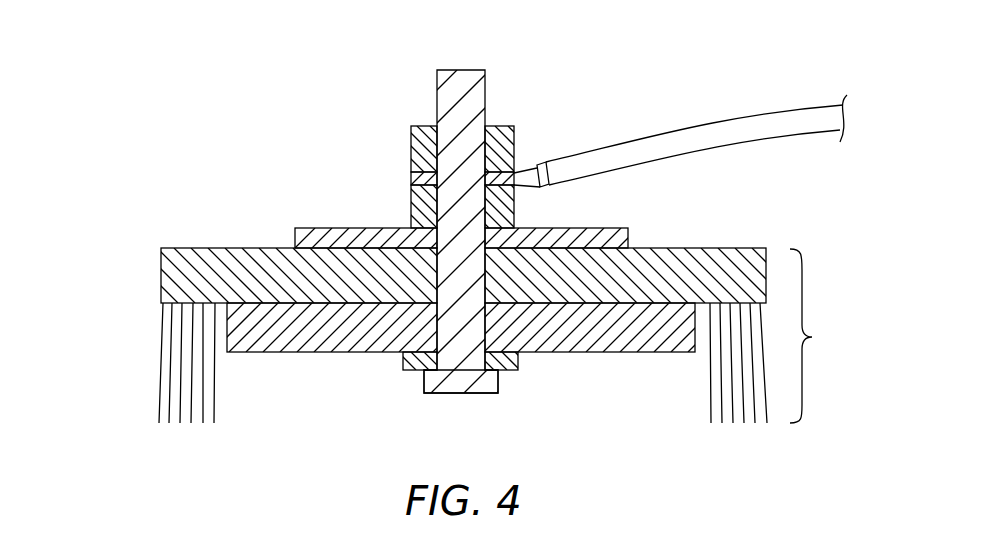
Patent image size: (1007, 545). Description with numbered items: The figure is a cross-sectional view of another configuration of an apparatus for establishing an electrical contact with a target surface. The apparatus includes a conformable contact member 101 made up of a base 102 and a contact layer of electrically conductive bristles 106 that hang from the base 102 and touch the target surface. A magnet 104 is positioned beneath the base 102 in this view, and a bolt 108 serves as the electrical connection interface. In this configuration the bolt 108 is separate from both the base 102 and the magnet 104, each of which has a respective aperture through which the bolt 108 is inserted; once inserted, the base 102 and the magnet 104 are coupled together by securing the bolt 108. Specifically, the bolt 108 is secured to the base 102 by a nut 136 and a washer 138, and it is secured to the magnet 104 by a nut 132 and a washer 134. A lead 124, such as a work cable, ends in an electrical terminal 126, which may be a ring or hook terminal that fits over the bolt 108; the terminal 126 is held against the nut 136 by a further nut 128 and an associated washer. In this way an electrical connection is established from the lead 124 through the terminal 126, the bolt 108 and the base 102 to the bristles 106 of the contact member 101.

The conformable contact member 101 is at (823, 336).
The base 102 is at (161, 275).
The magnet 104 is at (263, 352).
The bristles 106 is at (162, 367).
The bolt 108 is at (479, 69).
The lead 124 is at (717, 120).
The electrical terminal 126 is at (410, 182).
The nut 128 is at (410, 137).
The nut 132 is at (498, 383).
The washer 134 is at (518, 358).
The nut 136 is at (410, 220).
The washer 138 is at (295, 238).